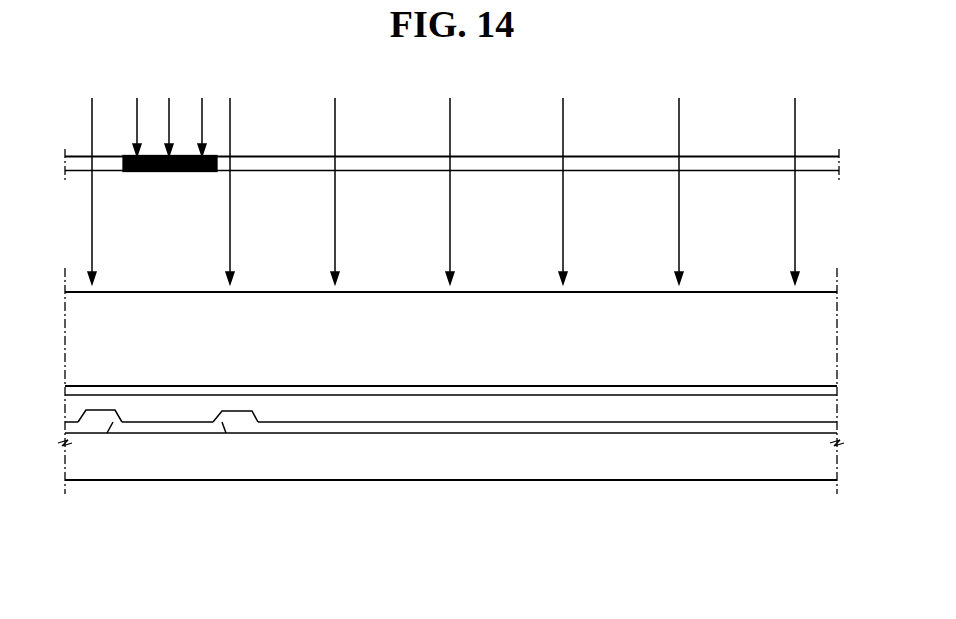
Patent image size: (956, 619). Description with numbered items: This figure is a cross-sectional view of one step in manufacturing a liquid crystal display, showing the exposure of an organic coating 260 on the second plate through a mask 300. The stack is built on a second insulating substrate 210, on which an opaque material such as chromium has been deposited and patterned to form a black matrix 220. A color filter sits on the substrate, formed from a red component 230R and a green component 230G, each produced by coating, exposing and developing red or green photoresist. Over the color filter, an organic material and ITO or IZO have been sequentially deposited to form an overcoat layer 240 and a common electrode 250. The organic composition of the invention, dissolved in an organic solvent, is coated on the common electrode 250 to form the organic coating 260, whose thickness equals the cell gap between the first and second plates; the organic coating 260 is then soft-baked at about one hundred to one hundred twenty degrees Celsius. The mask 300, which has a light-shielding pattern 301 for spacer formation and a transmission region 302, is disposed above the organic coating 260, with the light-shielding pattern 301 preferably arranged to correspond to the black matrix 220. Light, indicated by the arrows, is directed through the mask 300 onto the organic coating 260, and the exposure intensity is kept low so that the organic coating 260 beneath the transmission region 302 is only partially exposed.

The mask 300 is at (731, 125).
The light-shielding pattern 301 is at (150, 172).
The transmission region 302 is at (387, 165).
The second insulating substrate 210 is at (157, 463).
The black matrix 220 is at (210, 427).
The green component 230G is at (95, 420).
The red component 230R is at (328, 430).
The overcoat layer 240 is at (433, 410).
The common electrode 250 is at (520, 390).
The organic coating 260 is at (587, 350).